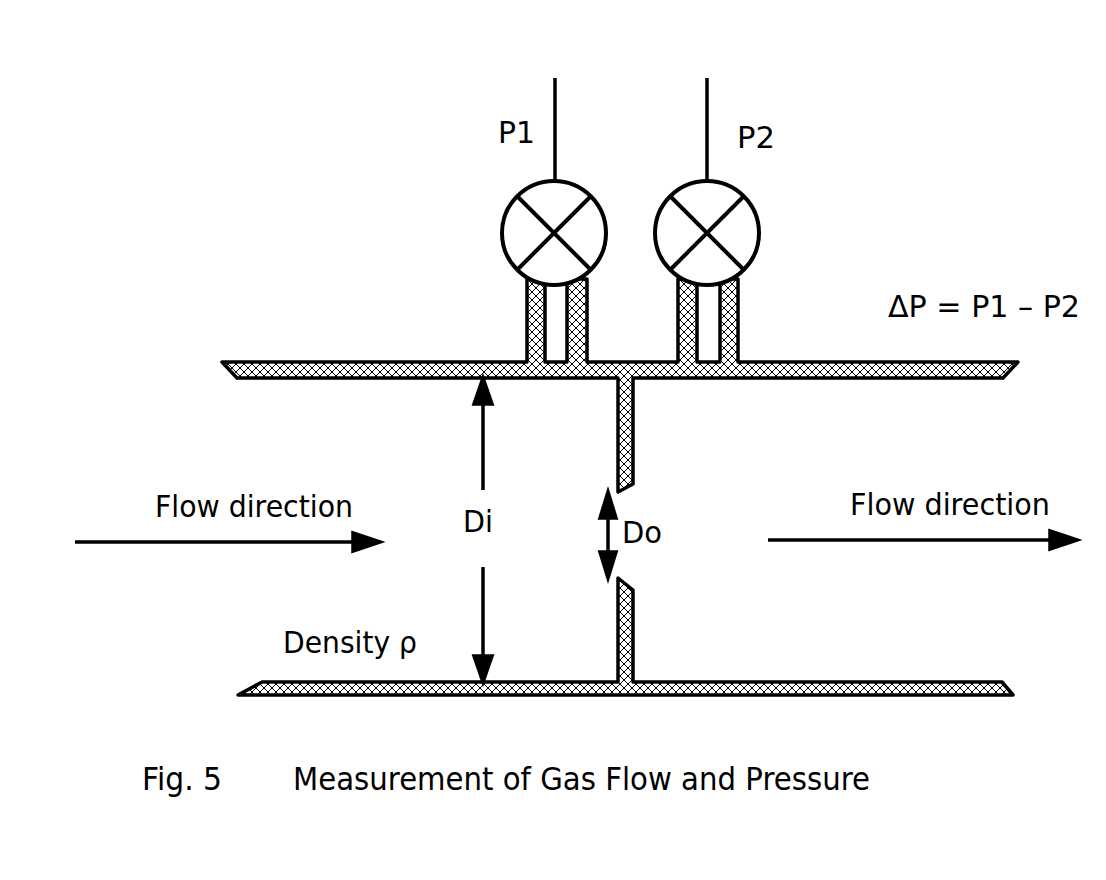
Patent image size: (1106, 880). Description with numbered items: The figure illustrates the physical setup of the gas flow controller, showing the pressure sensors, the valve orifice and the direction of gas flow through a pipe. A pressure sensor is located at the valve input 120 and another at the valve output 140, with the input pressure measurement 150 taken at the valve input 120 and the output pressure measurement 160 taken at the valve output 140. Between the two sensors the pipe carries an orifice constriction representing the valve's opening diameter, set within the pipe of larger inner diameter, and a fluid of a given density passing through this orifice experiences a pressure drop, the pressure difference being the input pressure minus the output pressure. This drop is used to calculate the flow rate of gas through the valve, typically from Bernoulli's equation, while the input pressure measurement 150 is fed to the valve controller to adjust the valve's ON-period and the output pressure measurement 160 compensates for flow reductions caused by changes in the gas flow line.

The valve input 120 is at (520, 233).
The valve output 140 is at (738, 233).
The input pressure measurement 150 is at (544, 103).
The output pressure measurement 160 is at (706, 103).